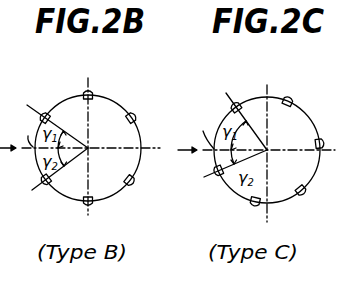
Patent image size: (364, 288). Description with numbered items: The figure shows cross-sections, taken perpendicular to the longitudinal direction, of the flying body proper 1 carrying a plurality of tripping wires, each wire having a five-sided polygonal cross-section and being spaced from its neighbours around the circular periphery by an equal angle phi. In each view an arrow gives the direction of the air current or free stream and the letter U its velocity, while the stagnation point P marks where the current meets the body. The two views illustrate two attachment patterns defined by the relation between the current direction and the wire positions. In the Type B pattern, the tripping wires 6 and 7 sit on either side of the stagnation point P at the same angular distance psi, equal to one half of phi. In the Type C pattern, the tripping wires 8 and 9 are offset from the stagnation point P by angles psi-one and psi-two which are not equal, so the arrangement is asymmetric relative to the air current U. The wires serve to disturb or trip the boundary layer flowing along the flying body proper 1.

In FIG. 2B, the flying body proper 1 is at (116, 104).
In FIG. 2C, the flying body proper 1 is at (296, 99).
In FIG. 2B, the tripping wire 6 is at (42, 110).
In FIG. 2B, the tripping wire 7 is at (42, 186).
In FIG. 2C, the tripping wire 8 is at (235, 100).
In FIG. 2C, the tripping wire 9 is at (213, 178).
In FIG. 2B, the stagnation point P is at (27, 131).
In FIG. 2C, the stagnation point P is at (205, 130).
In FIG. 2B, the velocity of the air current U is at (8, 137).
In FIG. 2C, the velocity of the air current U is at (187, 136).